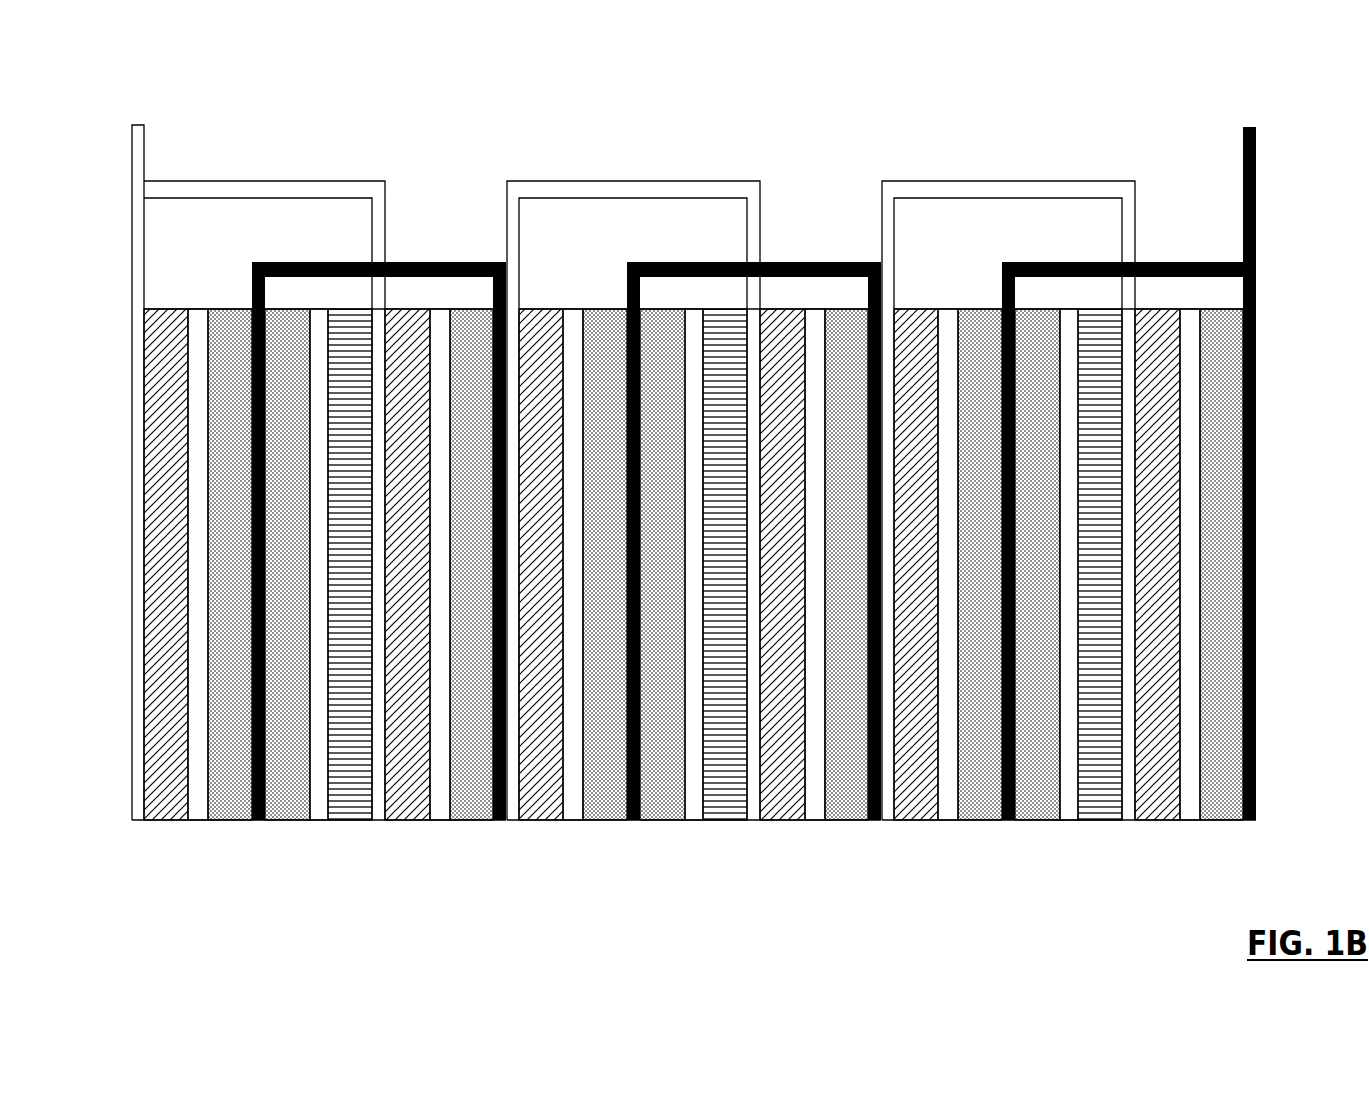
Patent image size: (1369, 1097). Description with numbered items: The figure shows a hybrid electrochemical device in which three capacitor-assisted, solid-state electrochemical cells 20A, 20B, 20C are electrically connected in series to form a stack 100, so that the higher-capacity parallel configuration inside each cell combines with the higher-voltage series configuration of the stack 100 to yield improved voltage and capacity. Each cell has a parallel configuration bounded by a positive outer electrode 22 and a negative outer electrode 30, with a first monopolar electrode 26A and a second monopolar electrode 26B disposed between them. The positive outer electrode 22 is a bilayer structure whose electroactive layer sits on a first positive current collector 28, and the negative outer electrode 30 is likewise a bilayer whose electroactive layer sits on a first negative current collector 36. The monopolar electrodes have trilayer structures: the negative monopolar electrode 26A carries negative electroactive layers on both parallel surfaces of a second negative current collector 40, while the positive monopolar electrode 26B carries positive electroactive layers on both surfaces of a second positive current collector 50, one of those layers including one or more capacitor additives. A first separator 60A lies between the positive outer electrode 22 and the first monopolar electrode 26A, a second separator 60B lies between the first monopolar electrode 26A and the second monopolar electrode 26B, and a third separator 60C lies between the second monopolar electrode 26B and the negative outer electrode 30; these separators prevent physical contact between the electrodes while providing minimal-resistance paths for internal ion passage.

The stack 100 is at (163, 70).
The electrochemical cell 20A is at (478, 117).
The electrochemical cell 20B is at (852, 117).
The electrochemical cell 20C is at (1245, 117).
The positive outer electrode 22 is at (534, 597).
The first monopolar electrode 26A is at (259, 828).
The second monopolar electrode 26B is at (754, 597).
The first positive current collector 28 is at (132, 473).
The negative outer electrode 30 is at (853, 597).
The first negative current collector 36 is at (493, 298).
The second negative current collector 40 is at (252, 287).
The second positive current collector 50 is at (386, 212).
The first separator 60A is at (198, 822).
The second separator 60B is at (320, 822).
The third separator 60C is at (441, 822).